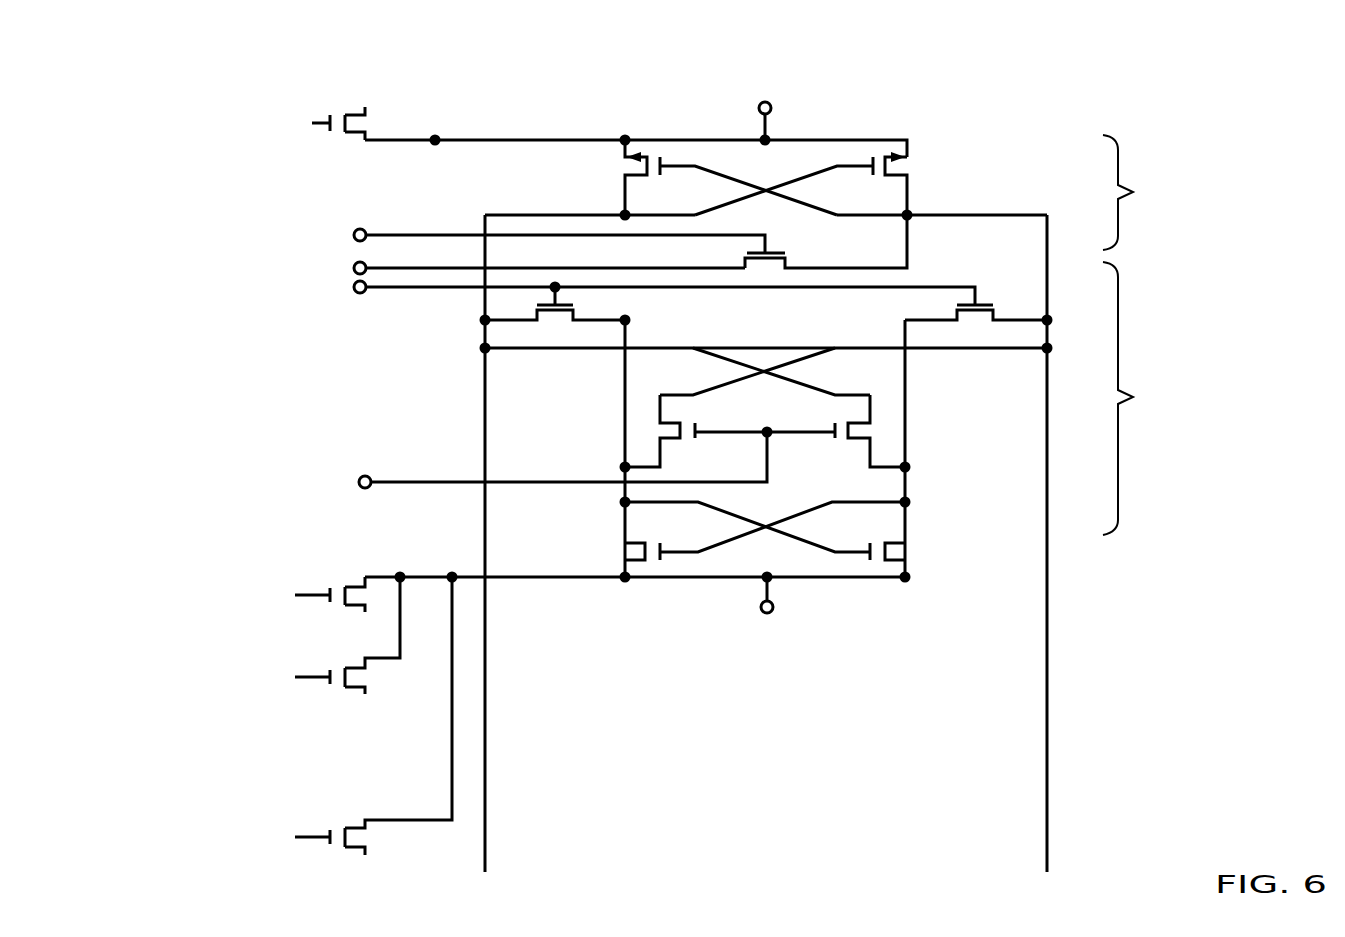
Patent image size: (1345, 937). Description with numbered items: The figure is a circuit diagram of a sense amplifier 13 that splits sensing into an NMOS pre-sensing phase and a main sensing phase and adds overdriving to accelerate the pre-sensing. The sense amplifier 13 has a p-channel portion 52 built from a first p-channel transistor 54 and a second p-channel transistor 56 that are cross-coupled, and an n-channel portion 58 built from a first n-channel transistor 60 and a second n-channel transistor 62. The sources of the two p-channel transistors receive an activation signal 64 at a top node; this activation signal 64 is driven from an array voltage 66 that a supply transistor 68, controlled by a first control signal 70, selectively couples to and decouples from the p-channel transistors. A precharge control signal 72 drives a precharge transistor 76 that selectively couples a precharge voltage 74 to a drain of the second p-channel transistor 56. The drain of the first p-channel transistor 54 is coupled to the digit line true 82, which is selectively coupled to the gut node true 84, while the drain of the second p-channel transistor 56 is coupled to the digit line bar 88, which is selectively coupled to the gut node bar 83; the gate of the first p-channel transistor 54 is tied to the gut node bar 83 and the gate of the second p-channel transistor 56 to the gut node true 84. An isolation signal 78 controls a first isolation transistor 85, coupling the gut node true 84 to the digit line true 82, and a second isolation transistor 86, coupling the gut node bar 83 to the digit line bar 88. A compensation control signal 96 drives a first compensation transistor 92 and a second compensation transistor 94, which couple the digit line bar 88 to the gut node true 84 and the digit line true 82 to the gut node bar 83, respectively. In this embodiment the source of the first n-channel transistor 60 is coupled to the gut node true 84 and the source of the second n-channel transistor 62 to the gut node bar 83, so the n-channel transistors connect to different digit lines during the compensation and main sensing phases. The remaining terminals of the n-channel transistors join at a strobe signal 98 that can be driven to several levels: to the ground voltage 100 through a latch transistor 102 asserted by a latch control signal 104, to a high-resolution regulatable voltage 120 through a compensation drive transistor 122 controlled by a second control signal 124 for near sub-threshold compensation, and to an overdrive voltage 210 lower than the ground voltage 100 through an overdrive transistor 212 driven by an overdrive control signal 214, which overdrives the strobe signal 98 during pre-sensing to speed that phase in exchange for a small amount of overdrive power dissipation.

The sense amplifier 13 is at (85, 694).
The PSA portion 52 is at (1135, 192).
The PSAa transistor 54 is at (548, 185).
The PSAb transistor 56 is at (965, 178).
The NSA portion 58 is at (1135, 398).
The NSAa transistor 60 is at (568, 535).
The NSAb transistor 62 is at (950, 567).
The ACT signal 64 is at (797, 82).
The array voltage VARY 66 is at (376, 68).
The transistor 68 is at (366, 137).
The SAP signal 70 is at (281, 103).
The BLPR signal 72 is at (317, 216).
The VBLP signal 74 is at (276, 268).
The transistor 76 is at (808, 248).
The ISOSA signal 78 is at (300, 312).
The DLT 82 is at (485, 688).
The gut node bar GUTB 83 is at (944, 406).
The gut node true GUTT 84 is at (588, 432).
The transistor MISOa 85 is at (600, 318).
The transistor MISOb 86 is at (996, 316).
The DLB 88 is at (1045, 612).
The transistor MCPa 92 is at (690, 424).
The transistor MCPb 94 is at (843, 426).
The BLCP signal 96 is at (363, 476).
The RNL signal 98 is at (795, 636).
The VSS 100 is at (325, 635).
The transistor 102 is at (338, 583).
The SAN signal 104 is at (260, 582).
The VNCP 120 is at (325, 716).
The transistor 122 is at (368, 677).
The NCP signal 124 is at (260, 690).
The VBBSA 210 is at (325, 877).
The transistor 212 is at (368, 838).
The ODV signal 214 is at (260, 850).